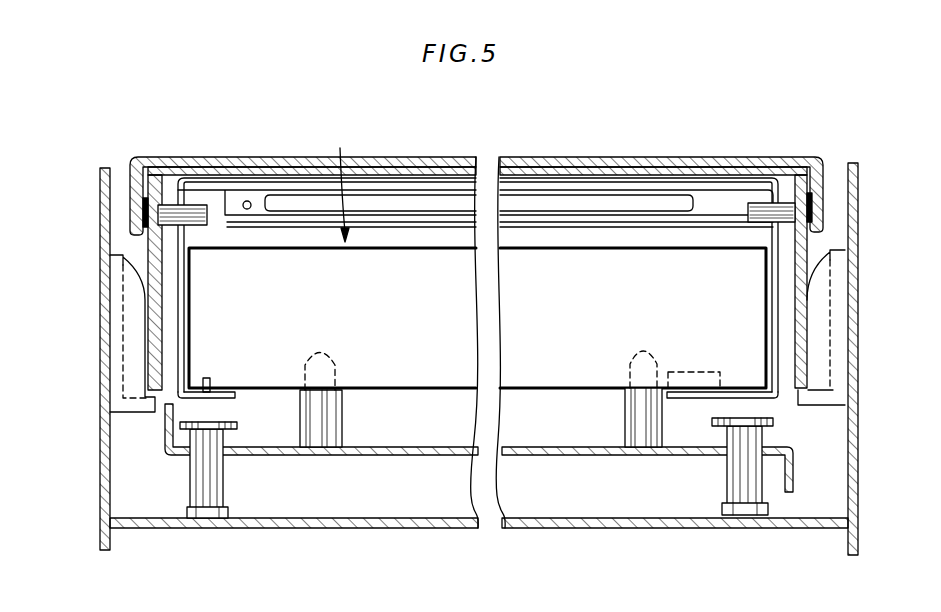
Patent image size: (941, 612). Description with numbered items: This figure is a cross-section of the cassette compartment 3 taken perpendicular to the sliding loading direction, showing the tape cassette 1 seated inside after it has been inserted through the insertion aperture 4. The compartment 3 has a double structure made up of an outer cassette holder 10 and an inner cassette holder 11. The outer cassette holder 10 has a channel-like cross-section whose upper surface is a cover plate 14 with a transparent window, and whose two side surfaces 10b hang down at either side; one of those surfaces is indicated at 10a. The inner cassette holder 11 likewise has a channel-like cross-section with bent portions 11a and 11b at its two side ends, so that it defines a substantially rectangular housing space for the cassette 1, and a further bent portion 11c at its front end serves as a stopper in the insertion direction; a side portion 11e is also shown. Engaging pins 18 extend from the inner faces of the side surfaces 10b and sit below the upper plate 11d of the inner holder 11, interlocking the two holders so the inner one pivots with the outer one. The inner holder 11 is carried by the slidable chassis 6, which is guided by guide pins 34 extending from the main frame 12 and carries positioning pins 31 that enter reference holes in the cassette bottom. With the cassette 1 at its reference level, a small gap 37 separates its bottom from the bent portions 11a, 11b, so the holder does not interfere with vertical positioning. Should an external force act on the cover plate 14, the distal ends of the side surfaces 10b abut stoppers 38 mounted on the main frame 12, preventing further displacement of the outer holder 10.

The tape cassette 1 is at (590, 258).
The cassette compartment 3 is at (419, 140).
The insertion aperture 4 is at (339, 180).
The slidable chassis 6 is at (412, 456).
The outer cassette holder 10 is at (233, 163).
The top plate 10a is at (394, 160).
The side surface 10b is at (153, 288).
The inner cassette holder 11 is at (292, 190).
The bent portion 11a is at (688, 400).
The bent portion 11b is at (220, 402).
The bent portion 11c is at (692, 380).
The upper plate 11d is at (540, 185).
The side clip 11e is at (180, 250).
The main frame 12 is at (372, 528).
The cover plate 14 is at (446, 157).
The engaging pin 18 is at (170, 208).
The positioning pin 31 is at (313, 425).
The guide pin 34 is at (200, 490).
The gap 37 is at (227, 390).
The stopper 38 is at (120, 340).